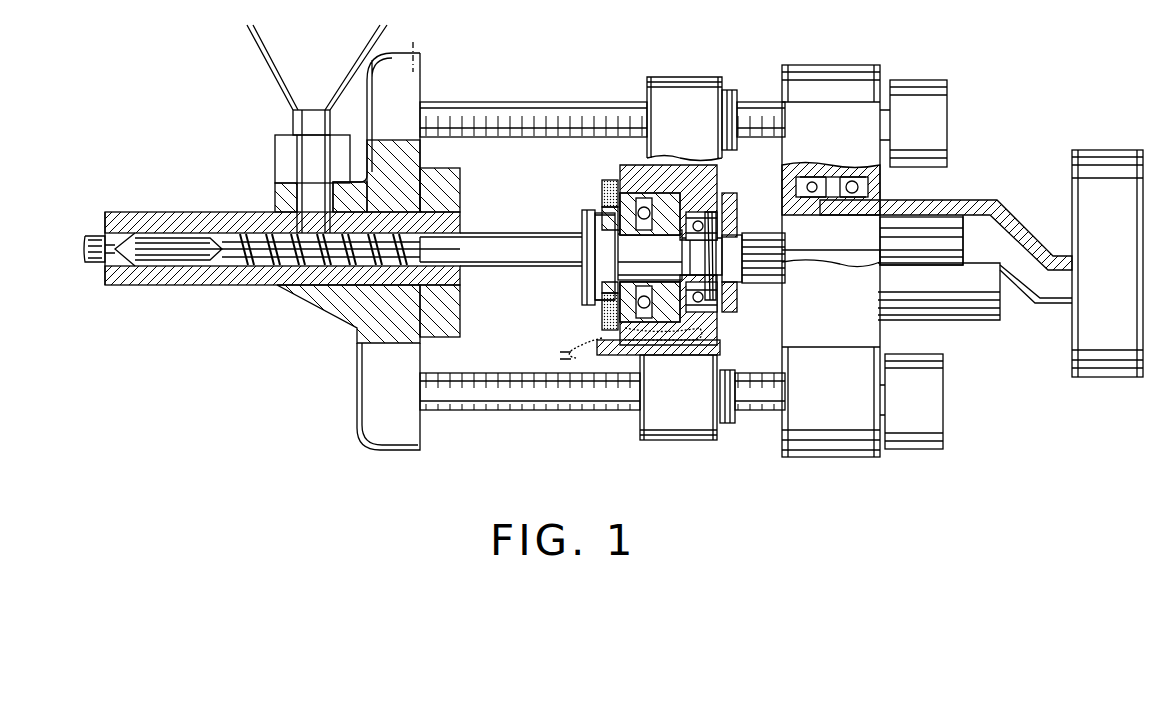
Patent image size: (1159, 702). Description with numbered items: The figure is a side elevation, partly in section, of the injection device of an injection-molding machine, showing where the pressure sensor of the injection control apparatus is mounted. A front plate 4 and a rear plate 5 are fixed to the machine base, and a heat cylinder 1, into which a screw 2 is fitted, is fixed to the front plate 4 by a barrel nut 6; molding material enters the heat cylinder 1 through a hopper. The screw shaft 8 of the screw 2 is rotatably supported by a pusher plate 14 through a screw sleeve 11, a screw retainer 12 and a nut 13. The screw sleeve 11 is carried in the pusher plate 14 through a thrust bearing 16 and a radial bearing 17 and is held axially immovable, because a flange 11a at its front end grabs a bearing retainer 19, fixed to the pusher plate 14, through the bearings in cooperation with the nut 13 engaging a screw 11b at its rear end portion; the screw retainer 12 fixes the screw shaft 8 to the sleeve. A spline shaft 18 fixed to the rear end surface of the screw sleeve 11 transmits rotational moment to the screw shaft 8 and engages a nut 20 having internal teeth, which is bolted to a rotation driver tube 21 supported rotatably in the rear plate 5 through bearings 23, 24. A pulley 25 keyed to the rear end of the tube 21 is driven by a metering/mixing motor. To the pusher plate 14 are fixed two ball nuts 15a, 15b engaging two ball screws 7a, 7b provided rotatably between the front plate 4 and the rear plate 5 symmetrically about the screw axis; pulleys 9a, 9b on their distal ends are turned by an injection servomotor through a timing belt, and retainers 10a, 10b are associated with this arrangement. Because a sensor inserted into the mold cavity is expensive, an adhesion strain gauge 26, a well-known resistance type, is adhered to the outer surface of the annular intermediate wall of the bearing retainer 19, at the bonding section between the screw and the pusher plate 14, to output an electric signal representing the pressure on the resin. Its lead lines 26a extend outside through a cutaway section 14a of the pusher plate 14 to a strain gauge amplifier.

The heat cylinder 1 is at (212, 285).
The screw 2 is at (245, 225).
The front plate 4 is at (412, 58).
The rear plate 5 is at (838, 70).
The barrel nut 6 is at (458, 312).
The ball screw 7a is at (528, 108).
The ball screw 7b is at (527, 410).
The screw shaft 8 is at (532, 270).
The pulley 9a is at (938, 106).
The pulley 9b is at (935, 397).
The retainer 10a is at (604, 180).
The retainer 10b is at (686, 319).
The screw sleeve 11 is at (670, 255).
The flange 11a is at (605, 296).
The screw 11b is at (742, 288).
The screw retainer 12 is at (584, 222).
The nut 13 is at (750, 230).
The pusher plate 14 is at (664, 440).
The cutaway section 14a is at (622, 348).
The ball nut 15a is at (733, 95).
The ball nut 15b is at (728, 428).
The thrust bearing 16 is at (630, 178).
The radial bearing 17 is at (718, 205).
The spline shaft 18 is at (780, 282).
The bearing retainer 19 is at (678, 183).
The nut 20 is at (880, 238).
The rotation driver tube 21 is at (960, 200).
The bearing 23 is at (812, 170).
The bearing 24 is at (850, 170).
The pulley 25 is at (1108, 150).
The adhesion strain gauge 26 is at (668, 342).
The lead lines 26a is at (560, 352).